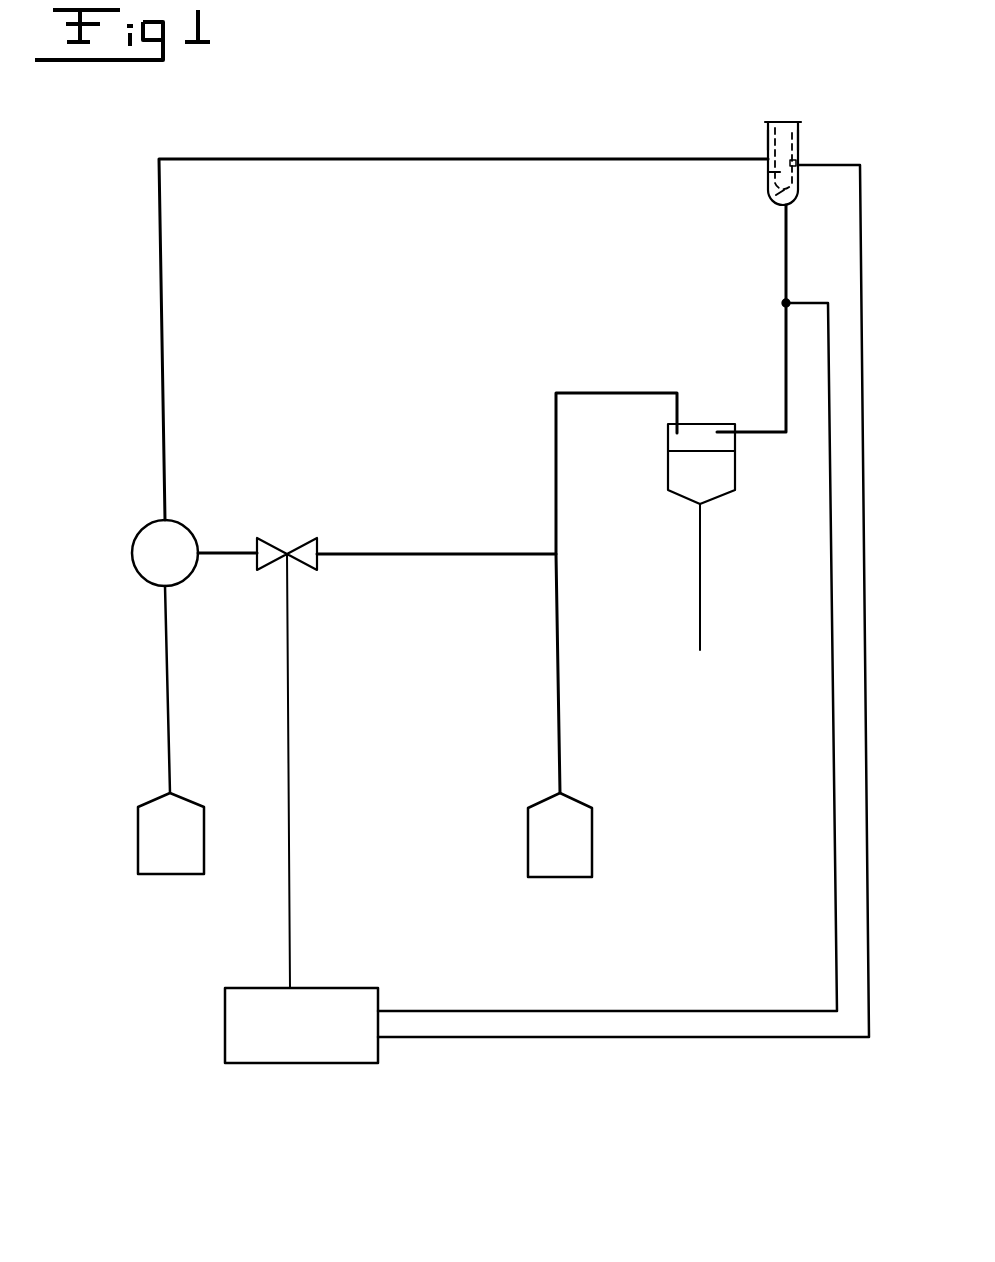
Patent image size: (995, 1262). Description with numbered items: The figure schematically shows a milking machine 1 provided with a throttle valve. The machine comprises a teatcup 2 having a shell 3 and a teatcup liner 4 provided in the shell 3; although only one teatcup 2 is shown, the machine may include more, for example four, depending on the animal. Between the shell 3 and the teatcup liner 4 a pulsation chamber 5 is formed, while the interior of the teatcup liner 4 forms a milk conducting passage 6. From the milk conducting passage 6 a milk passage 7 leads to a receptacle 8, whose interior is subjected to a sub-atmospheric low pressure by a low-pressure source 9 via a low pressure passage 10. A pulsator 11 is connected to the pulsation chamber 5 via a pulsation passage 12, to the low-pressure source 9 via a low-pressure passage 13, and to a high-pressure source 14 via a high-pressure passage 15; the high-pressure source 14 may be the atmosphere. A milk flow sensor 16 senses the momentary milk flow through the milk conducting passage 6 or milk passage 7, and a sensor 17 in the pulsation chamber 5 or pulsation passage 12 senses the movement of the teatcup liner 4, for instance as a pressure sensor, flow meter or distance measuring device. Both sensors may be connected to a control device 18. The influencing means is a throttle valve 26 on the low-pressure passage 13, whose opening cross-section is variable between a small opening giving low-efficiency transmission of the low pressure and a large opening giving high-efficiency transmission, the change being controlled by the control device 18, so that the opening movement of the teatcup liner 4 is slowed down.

The milking machine 1 is at (490, 128).
The teatcup 2 is at (786, 122).
The shell 3 is at (803, 134).
The teatcup liner 4 is at (768, 172).
The pulsation chamber 5 is at (770, 138).
The milk conducting passage 6 is at (782, 190).
The milk passage 7 is at (786, 368).
The receptacle 8 is at (703, 484).
The low-pressure source 9 is at (575, 830).
The low pressure passage 10 is at (556, 492).
The pulsator 11 is at (173, 542).
The pulsation passage 12 is at (522, 158).
The low-pressure passage 13 is at (472, 552).
The high-pressure source 14 is at (153, 845).
The high-pressure passage 15 is at (165, 690).
The milk flow sensor 16 is at (786, 303).
The sensor 17 is at (798, 158).
The control device 18 is at (355, 1050).
The throttle valve 26 is at (306, 553).